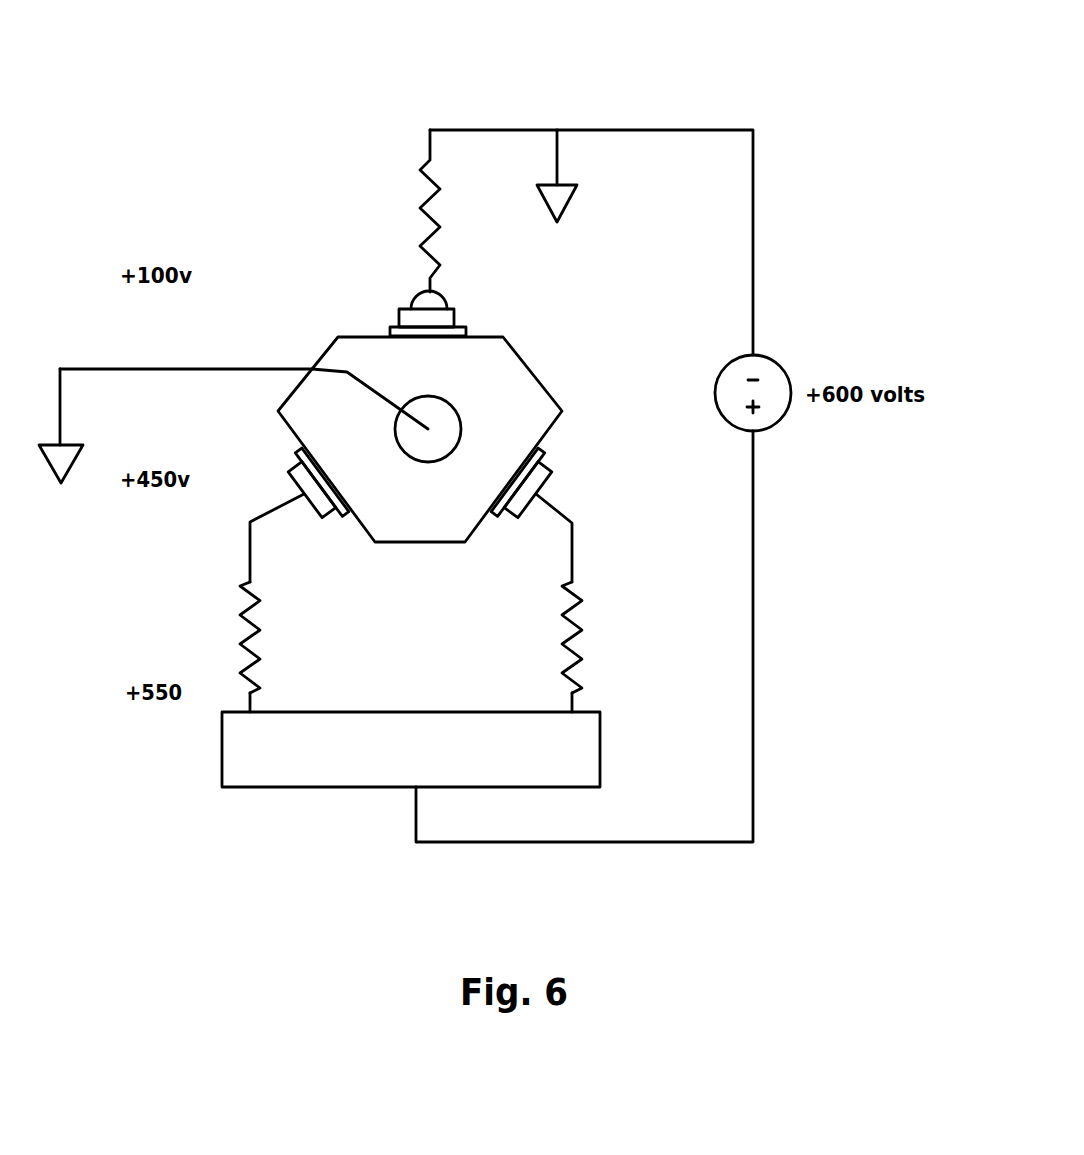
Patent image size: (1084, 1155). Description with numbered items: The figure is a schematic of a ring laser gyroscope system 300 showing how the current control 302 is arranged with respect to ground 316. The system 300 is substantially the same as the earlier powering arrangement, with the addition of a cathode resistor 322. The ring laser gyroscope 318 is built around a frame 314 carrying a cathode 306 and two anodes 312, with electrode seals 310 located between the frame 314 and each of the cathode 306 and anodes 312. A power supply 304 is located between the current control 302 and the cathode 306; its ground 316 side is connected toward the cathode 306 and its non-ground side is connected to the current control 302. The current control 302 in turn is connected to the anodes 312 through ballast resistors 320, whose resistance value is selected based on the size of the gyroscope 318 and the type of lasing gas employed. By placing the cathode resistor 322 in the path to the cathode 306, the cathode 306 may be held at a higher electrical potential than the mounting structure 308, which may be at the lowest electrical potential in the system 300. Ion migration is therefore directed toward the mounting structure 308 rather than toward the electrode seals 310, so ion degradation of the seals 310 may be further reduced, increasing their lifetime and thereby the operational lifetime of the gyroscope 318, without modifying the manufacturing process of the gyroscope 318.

The ring laser gyroscope system 300 is at (824, 39).
The current control 302 is at (600, 748).
The power supply 304 is at (780, 418).
The cathode 306 is at (453, 318).
The mounting structure 308 is at (428, 395).
The electrode seals 310 is at (388, 330).
The anodes 312 is at (325, 513).
The frame 314 is at (418, 517).
The ground 316 is at (568, 212).
The ring laser gyroscope 318 is at (560, 364).
The ballast resistors 320 is at (239, 625).
The cathode resistor 322 is at (422, 208).